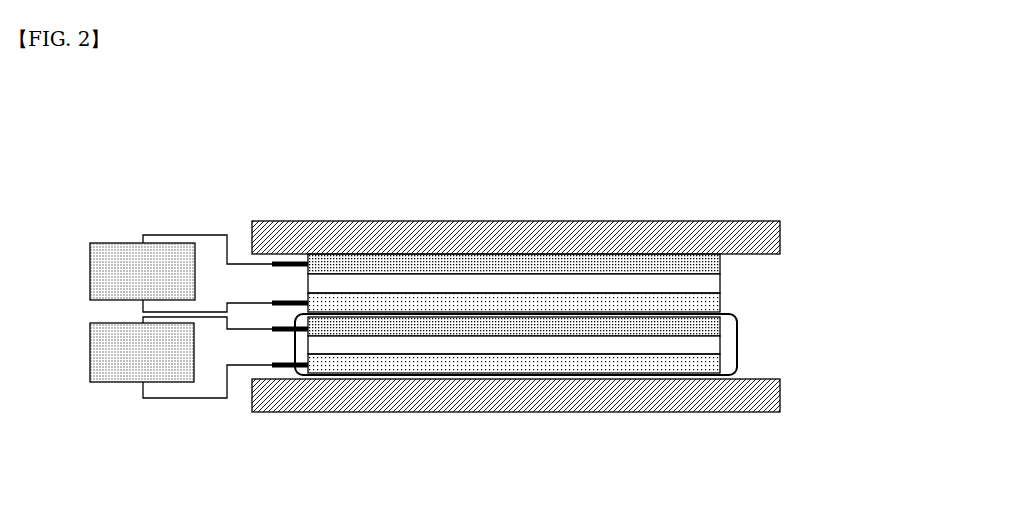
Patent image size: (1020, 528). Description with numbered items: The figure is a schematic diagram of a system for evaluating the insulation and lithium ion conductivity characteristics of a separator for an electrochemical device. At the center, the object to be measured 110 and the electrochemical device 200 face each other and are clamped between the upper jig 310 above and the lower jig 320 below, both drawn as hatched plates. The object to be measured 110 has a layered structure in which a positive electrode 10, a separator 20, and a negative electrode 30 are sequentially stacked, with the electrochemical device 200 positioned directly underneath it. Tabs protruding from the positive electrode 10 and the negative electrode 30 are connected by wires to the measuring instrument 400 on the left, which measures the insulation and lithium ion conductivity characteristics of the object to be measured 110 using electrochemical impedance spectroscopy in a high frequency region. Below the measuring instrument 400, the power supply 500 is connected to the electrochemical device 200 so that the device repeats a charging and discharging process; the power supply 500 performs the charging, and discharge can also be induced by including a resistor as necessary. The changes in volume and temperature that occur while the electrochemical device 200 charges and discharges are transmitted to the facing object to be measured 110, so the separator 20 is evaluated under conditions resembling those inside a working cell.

The positive electrode 10 is at (720, 264).
The separator 20 is at (720, 283).
The negative electrode 30 is at (720, 305).
The object to be measured 110 is at (610, 290).
The electrochemical device 200 is at (737, 341).
The upper jig 310 is at (780, 240).
The lower jig 320 is at (780, 398).
The measuring instrument 400 is at (115, 243).
The power supply 500 is at (123, 382).